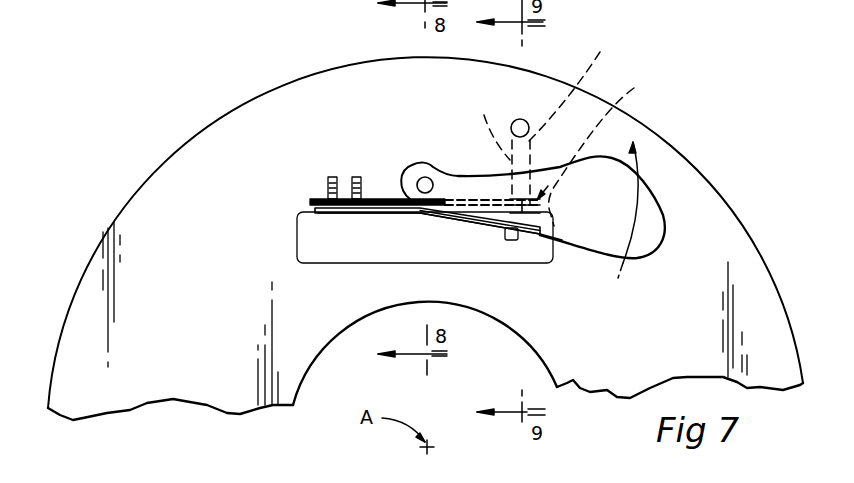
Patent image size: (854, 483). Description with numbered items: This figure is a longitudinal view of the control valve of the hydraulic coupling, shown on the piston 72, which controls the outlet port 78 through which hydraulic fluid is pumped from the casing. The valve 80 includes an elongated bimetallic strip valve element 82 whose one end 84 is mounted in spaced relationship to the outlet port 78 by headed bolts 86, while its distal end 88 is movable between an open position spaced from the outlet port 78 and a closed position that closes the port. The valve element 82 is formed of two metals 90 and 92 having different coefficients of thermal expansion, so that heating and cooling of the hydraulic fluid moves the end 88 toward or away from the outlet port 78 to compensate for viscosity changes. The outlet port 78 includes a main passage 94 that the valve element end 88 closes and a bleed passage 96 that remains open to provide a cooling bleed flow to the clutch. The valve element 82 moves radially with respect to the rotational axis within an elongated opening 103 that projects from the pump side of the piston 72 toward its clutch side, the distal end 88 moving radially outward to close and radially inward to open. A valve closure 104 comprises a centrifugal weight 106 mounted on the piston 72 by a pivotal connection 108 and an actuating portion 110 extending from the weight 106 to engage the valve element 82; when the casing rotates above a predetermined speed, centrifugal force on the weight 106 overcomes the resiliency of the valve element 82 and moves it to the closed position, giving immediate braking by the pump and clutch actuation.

The piston 72 is at (152, 192).
The outlet port 78 is at (528, 120).
The valve 80 is at (489, 247).
The valve element 82 is at (438, 219).
The one end of valve element 84 is at (316, 199).
The headed bolts 86 is at (354, 177).
The distal end of valve element 88 is at (534, 248).
The metal 90 is at (418, 217).
The metal 92 is at (398, 196).
The main passage 94 is at (486, 125).
The bleed passage 96 is at (636, 91).
The elongated opening 103 is at (300, 213).
The valve closure 104 is at (583, 263).
The centrifugal weight 106 is at (655, 213).
The pivotal connection 108 is at (426, 176).
The actuating portion 110 is at (509, 242).